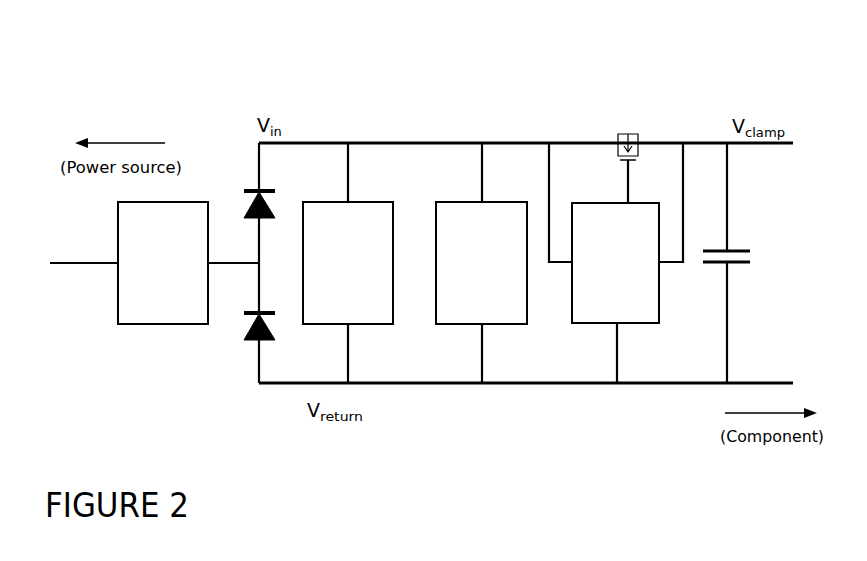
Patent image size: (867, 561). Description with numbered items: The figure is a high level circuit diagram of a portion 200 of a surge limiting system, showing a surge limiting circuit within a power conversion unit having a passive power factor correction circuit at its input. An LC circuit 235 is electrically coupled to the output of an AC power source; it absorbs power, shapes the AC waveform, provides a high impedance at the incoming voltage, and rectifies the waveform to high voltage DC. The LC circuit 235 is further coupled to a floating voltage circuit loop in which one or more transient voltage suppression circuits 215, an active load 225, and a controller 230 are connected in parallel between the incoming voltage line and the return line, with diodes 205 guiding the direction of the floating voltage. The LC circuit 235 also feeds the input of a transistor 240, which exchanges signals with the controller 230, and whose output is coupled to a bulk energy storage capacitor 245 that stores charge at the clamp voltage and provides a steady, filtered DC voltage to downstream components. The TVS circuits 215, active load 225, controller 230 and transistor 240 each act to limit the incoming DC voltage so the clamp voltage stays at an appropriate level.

The portion 200 is at (408, 466).
The diodes 205 is at (243, 347).
The transient voltage suppression (TVS) circuits 215 is at (378, 219).
The active load 225 is at (511, 219).
The controller 230 is at (594, 307).
The LC circuit 235 is at (141, 313).
The transistor 240 is at (618, 130).
The bulk energy storage capacitor 245 is at (742, 278).